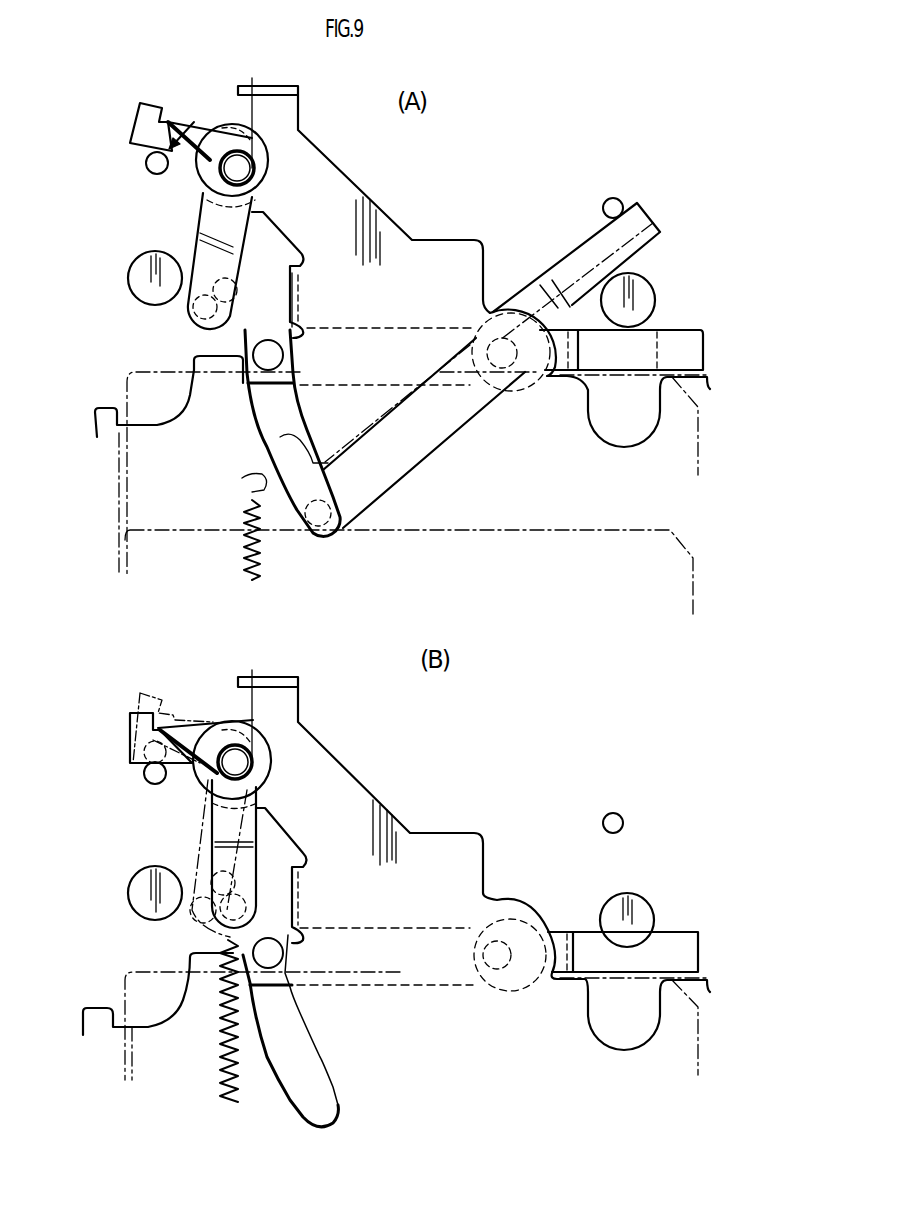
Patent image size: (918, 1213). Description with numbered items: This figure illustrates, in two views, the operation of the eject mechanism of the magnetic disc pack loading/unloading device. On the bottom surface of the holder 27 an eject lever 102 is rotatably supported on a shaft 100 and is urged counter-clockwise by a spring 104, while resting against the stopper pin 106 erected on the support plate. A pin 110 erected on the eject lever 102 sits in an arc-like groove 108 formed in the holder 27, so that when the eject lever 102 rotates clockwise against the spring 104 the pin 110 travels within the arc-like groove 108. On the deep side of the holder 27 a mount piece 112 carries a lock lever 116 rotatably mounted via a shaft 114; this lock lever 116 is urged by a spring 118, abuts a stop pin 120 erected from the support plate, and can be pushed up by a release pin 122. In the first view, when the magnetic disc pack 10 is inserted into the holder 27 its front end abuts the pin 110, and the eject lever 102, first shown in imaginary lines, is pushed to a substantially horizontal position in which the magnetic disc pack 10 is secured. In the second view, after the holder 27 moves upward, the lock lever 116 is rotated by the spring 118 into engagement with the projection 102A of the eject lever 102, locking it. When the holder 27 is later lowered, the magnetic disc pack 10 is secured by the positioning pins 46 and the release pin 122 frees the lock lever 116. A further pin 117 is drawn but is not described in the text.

The magnetic disc pack 10 is at (700, 428).
The holder 27 is at (716, 455).
The positioning pin 46 is at (150, 250).
The shaft 100 is at (495, 312).
The eject lever 102 is at (383, 324).
The projection 102A is at (240, 290).
The spring 104 is at (247, 547).
The stopper pin 106 is at (606, 200).
The arc-like groove 108 is at (303, 430).
The pin 110 is at (250, 358).
The mount piece 112 is at (393, 240).
The shaft 114 is at (240, 170).
The lock lever 116 is at (230, 225).
The pin 117 is at (188, 323).
The spring 118 is at (255, 117).
The stop pin 120 is at (168, 172).
The release pin 122 is at (238, 128).